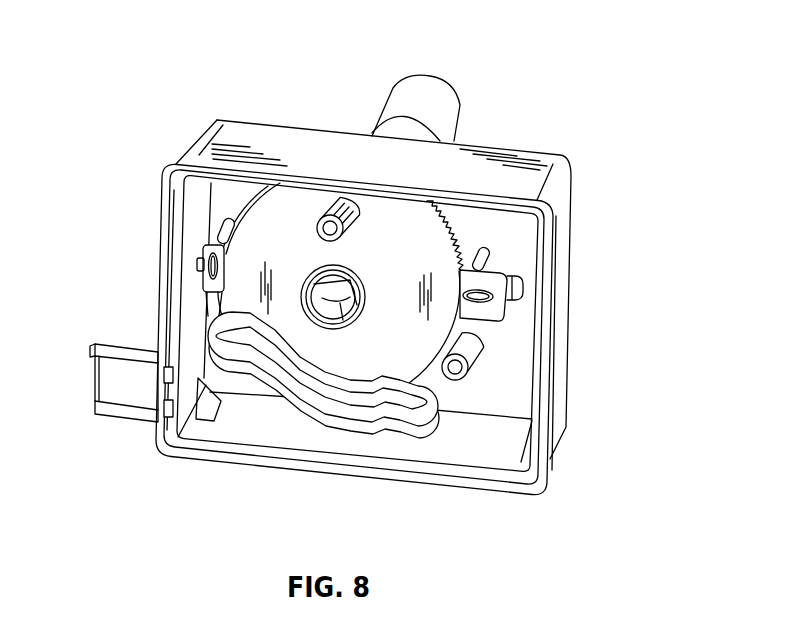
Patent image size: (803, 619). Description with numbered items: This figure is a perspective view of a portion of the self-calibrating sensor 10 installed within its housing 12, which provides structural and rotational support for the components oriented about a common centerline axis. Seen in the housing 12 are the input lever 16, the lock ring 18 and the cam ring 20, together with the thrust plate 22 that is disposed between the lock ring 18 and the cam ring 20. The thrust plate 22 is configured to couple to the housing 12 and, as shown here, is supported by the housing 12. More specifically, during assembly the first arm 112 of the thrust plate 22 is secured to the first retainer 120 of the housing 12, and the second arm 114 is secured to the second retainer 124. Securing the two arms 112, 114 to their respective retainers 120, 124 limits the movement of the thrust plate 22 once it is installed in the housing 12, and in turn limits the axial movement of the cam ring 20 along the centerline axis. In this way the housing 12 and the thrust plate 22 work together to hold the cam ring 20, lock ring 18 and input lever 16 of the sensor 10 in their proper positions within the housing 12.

The self-calibrating sensor 10 is at (390, 259).
The housing 12 is at (568, 217).
The input lever 16 is at (439, 96).
The lock ring 18 is at (452, 225).
The cam ring 20 is at (313, 203).
The thrust plate 22 is at (508, 290).
The first arm 112 is at (506, 300).
The second arm 114 is at (163, 253).
The first retainer 120 is at (492, 274).
The second retainer 124 is at (207, 268).